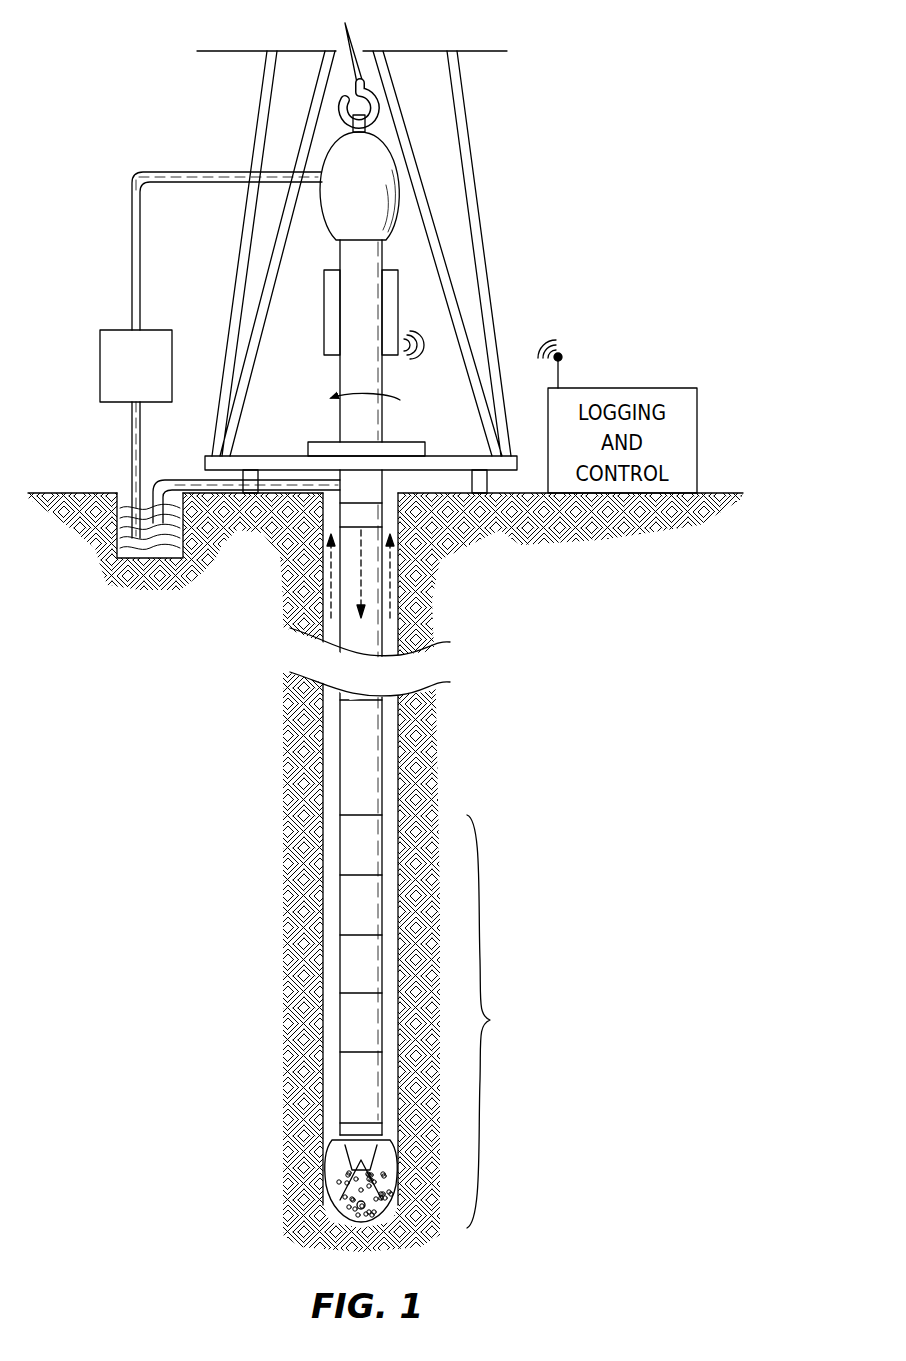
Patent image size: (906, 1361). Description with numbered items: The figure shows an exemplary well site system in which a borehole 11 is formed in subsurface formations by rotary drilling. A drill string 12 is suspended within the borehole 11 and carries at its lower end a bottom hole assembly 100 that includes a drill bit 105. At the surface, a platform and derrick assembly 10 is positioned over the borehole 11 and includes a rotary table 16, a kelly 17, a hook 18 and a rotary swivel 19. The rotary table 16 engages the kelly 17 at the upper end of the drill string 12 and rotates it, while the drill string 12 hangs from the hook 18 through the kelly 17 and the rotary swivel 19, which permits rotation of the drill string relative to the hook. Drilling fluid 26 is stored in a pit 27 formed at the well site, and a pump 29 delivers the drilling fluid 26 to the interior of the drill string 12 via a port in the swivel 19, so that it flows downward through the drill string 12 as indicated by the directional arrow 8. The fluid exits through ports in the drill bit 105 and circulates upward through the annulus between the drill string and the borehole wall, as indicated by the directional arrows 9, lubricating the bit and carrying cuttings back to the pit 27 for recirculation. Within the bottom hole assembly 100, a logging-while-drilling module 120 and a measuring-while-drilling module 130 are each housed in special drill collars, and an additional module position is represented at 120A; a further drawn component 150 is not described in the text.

The platform and derrick assembly 10 is at (489, 150).
The hook 18 is at (356, 84).
The rotary swivel 19 is at (333, 218).
The kelly 17 is at (346, 436).
The rotary table 16 is at (407, 447).
The drill string 12 is at (361, 490).
The borehole 11 is at (393, 490).
The pump 29 is at (113, 403).
The pit 27 is at (123, 497).
The drilling fluid 26 is at (148, 552).
The directional arrows 9 is at (327, 560).
The directional arrow 8 is at (360, 582).
The bottom hole assembly 100 is at (504, 1021).
The logging-while-drilling (LWD) module 120 is at (347, 903).
The measuring-while-drilling (MWD) module 130 is at (347, 963).
The additional LWD and/or MWD module 120A is at (347, 1022).
The downhole tool 150 is at (347, 1082).
The drill bit 105 is at (333, 1170).